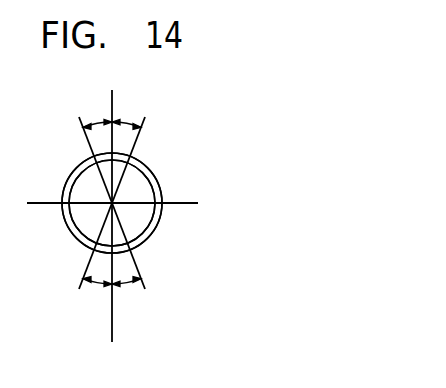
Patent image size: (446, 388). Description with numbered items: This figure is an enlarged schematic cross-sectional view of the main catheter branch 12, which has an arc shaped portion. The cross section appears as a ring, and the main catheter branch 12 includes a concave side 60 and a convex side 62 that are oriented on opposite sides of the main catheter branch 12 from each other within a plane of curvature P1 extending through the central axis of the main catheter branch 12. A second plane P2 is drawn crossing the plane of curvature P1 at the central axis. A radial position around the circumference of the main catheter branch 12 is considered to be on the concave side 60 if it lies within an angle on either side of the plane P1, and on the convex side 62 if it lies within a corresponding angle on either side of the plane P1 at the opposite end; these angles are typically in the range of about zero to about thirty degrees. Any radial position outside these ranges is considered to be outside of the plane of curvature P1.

The main catheter branch 12 is at (160, 180).
The concave side 60 is at (139, 161).
The convex side 62 is at (146, 240).
The plane of curvature P1 is at (112, 331).
The second reference plane P2 is at (183, 203).